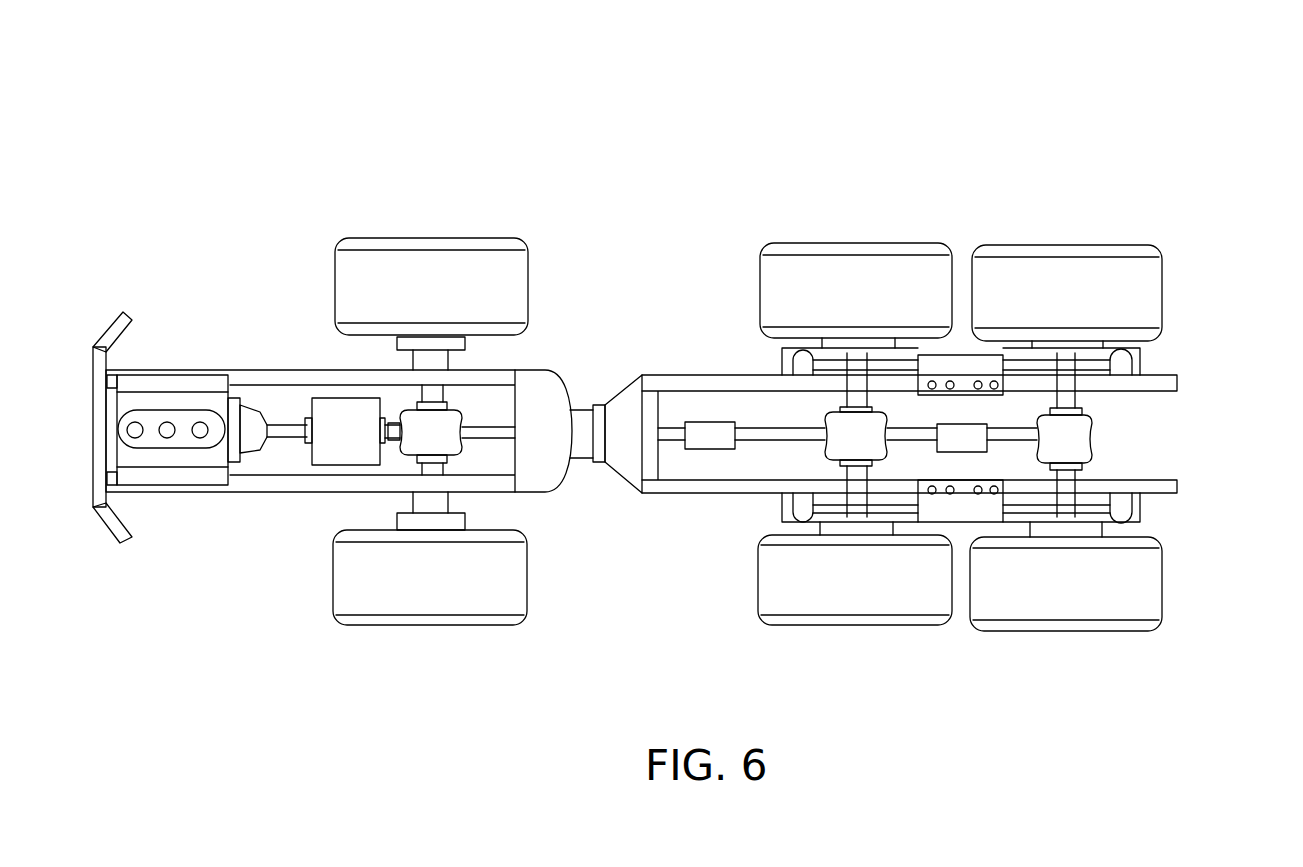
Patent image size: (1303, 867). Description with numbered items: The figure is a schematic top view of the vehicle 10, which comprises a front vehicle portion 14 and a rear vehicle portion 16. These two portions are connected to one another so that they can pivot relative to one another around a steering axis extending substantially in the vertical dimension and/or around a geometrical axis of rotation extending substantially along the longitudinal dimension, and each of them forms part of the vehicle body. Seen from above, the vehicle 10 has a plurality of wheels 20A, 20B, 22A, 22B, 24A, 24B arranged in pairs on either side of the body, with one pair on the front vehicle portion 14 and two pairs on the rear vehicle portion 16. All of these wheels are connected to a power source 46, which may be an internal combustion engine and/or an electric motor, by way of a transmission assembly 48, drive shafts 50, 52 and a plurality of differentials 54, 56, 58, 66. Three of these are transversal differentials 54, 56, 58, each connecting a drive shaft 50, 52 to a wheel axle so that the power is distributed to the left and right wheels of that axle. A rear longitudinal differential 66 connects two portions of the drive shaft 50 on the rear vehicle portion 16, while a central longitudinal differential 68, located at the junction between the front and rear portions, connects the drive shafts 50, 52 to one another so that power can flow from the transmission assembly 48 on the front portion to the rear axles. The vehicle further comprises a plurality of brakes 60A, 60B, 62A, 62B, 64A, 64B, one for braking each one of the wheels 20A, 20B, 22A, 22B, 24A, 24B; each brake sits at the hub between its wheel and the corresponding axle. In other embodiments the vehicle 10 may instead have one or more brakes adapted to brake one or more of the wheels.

The vehicle 10 is at (976, 106).
The front vehicle portion 14 is at (151, 222).
The rear vehicle portion 16 is at (1168, 180).
The wheel 20A is at (435, 265).
The wheel 20B is at (433, 597).
The wheel 22A is at (870, 270).
The wheel 22B is at (842, 597).
The wheel 24A is at (1068, 273).
The wheel 24B is at (1068, 605).
The power source 46 is at (193, 400).
The transmission assembly 48 is at (342, 420).
The drive shaft 50 is at (765, 437).
The drive shaft 52 is at (290, 428).
The transversal differential 54 is at (447, 410).
The transversal differential 56 is at (842, 428).
The transversal differential 58 is at (1085, 436).
The brake 60A is at (425, 363).
The brake 60B is at (425, 500).
The brake 62A is at (833, 344).
The brake 62B is at (833, 523).
The brake 64A is at (1047, 345).
The brake 64B is at (1043, 530).
The rear longitudinal differential 66 is at (953, 453).
The central longitudinal differential 68 is at (703, 450).